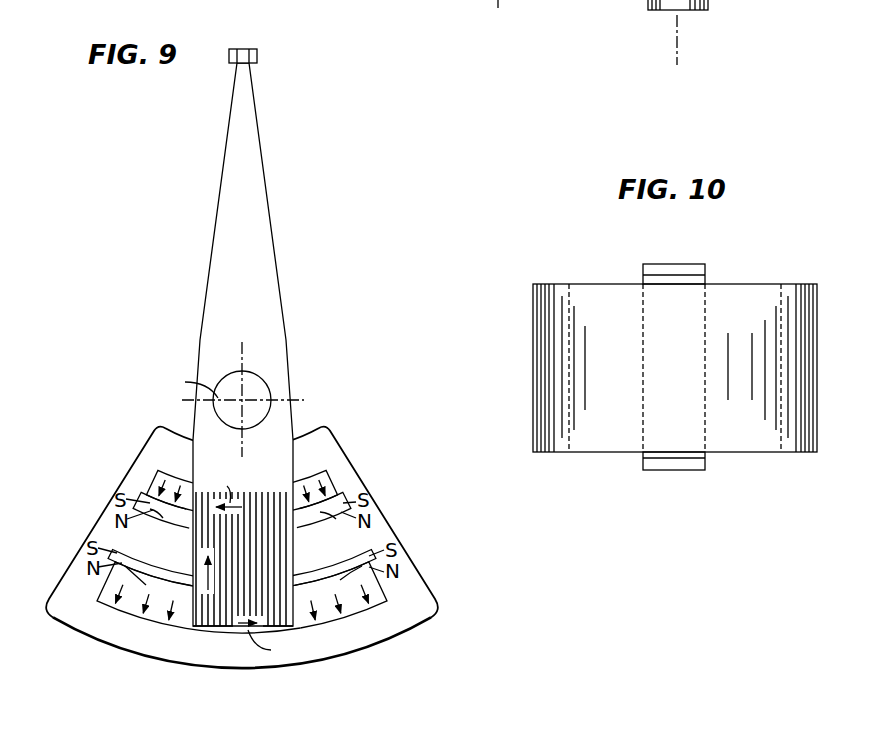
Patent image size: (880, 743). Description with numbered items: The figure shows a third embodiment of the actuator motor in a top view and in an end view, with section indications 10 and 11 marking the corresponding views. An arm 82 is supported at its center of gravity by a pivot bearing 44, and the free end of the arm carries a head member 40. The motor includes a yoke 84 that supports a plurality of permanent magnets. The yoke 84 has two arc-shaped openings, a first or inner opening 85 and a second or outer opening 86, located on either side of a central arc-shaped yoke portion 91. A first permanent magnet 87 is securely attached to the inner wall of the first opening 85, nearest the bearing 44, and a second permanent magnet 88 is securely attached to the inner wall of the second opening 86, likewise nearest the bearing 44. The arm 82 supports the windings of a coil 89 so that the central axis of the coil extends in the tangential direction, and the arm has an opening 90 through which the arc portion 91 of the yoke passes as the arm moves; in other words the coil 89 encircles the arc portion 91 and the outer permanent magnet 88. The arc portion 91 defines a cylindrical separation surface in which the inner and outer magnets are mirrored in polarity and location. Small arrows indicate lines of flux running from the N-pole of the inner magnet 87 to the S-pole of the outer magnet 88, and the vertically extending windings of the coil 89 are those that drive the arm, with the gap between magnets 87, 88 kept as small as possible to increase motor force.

In FIG. 9, the section line 10- 10 is at (135, 697).
In FIG. 10, the section line 11- 11 is at (832, 272).
In FIG. 9, the head end of actuator arm 40 is at (252, 47).
In FIG. 9, the pivot bearing 44 is at (270, 384).
In FIG. 9, the arm 82 is at (272, 217).
In FIG. 9, the yoke 84 is at (388, 503).
In FIG. 10, the yoke 84 is at (532, 313).
In FIG. 9, the first or inner opening 85 is at (327, 476).
In FIG. 9, the second or outer opening 86 is at (152, 620).
In FIG. 9, the first permanent magnet 87 is at (337, 500).
In FIG. 9, the second permanent magnet 88 is at (369, 578).
In FIG. 9, the coil 89 is at (230, 613).
In FIG. 10, the coil 89 is at (674, 264).
In FIG. 10, the opening 90 is at (572, 17).
In FIG. 9, the central arc-shaped yoke portion 91 is at (350, 538).